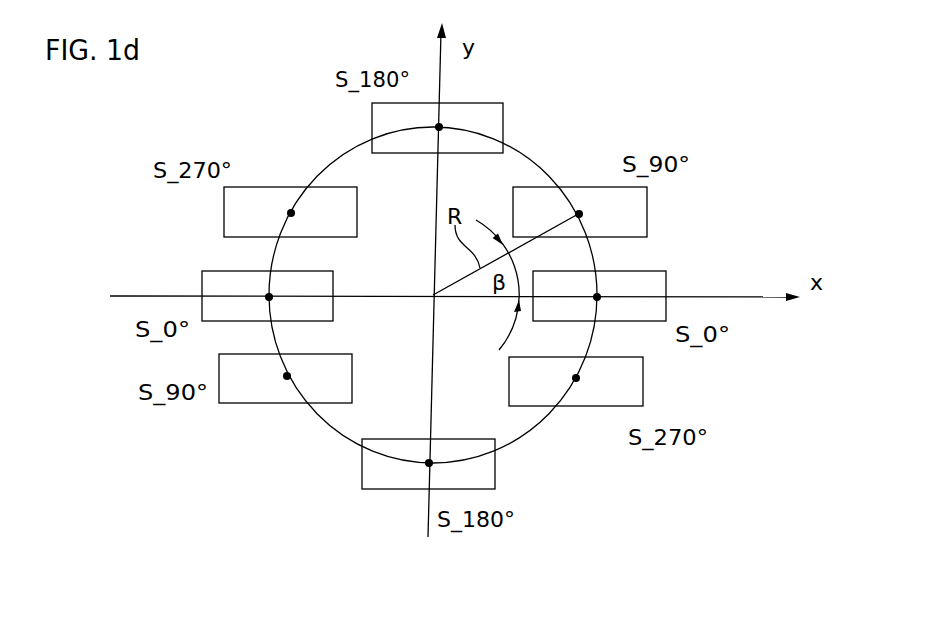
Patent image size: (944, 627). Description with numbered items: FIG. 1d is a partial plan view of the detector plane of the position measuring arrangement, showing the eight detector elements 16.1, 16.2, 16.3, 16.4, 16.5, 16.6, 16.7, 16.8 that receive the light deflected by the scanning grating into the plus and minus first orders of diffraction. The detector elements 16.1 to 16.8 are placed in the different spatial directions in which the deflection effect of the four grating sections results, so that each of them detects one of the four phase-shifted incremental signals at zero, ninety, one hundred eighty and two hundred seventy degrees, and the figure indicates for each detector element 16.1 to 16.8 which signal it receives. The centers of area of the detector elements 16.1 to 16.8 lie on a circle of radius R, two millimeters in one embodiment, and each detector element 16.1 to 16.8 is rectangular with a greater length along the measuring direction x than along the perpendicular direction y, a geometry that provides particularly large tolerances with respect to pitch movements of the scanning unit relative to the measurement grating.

The detector element 16.1 is at (640, 272).
The detector element 16.2 is at (588, 201).
The detector element 16.3 is at (484, 118).
The detector element 16.4 is at (287, 195).
The detector element 16.5 is at (237, 277).
The detector element 16.6 is at (248, 383).
The detector element 16.7 is at (400, 472).
The detector element 16.8 is at (604, 387).